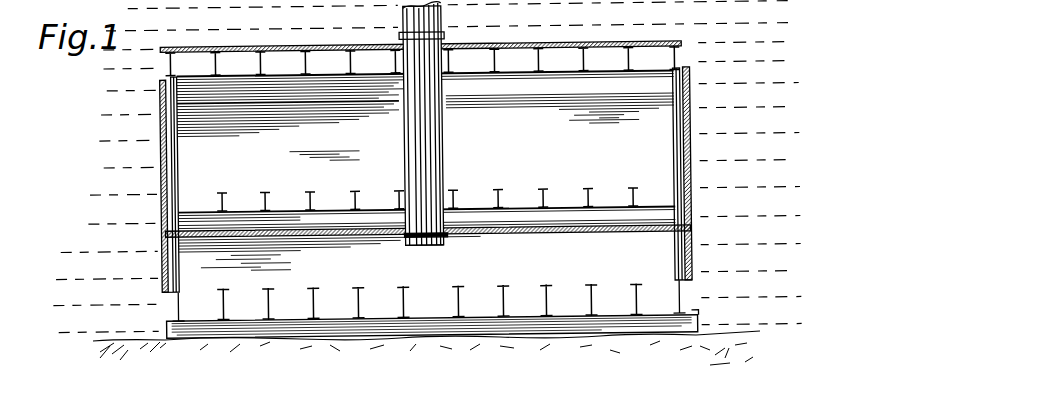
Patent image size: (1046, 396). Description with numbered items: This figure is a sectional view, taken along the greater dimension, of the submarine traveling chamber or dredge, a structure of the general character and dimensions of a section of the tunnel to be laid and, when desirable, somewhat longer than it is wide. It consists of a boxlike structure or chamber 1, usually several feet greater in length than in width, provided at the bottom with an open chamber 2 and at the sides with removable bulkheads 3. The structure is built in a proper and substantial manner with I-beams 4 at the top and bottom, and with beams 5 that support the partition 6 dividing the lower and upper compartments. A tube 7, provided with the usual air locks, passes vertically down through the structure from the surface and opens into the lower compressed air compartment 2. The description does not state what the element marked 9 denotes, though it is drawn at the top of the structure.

The boxlike structure or chamber 1 is at (426, 121).
The open chamber 2 is at (361, 257).
The removable bulkheads 3 is at (163, 169).
The I-beams 4 is at (541, 61).
The beams 5 is at (316, 201).
The partition 6 is at (353, 235).
The tube 7 is at (444, 132).
The top plank 9 is at (558, 50).